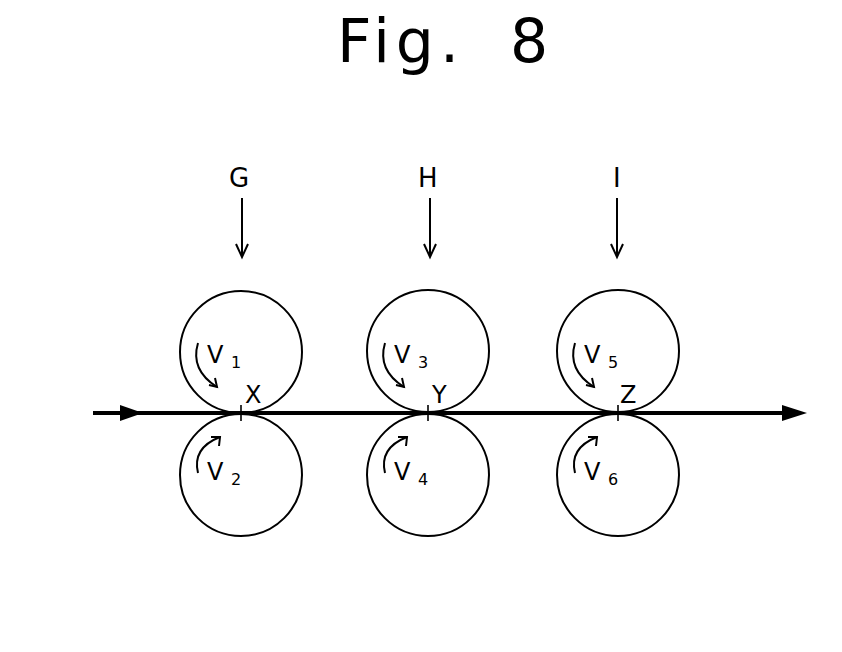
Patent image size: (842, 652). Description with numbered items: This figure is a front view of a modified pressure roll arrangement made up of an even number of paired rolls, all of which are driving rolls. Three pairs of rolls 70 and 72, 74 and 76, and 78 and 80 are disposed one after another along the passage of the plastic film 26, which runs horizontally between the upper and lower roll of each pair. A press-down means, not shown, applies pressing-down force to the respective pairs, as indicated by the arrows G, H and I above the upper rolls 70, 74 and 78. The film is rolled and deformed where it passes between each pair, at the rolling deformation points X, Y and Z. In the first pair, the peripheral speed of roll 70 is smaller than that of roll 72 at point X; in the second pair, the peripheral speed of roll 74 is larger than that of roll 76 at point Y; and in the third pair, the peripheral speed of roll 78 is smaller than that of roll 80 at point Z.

The plastic film 26 is at (107, 410).
The roll 70 is at (257, 315).
The roll 72 is at (258, 518).
The roll 74 is at (445, 313).
The roll 76 is at (447, 517).
The roll 78 is at (635, 313).
The roll 80 is at (635, 517).